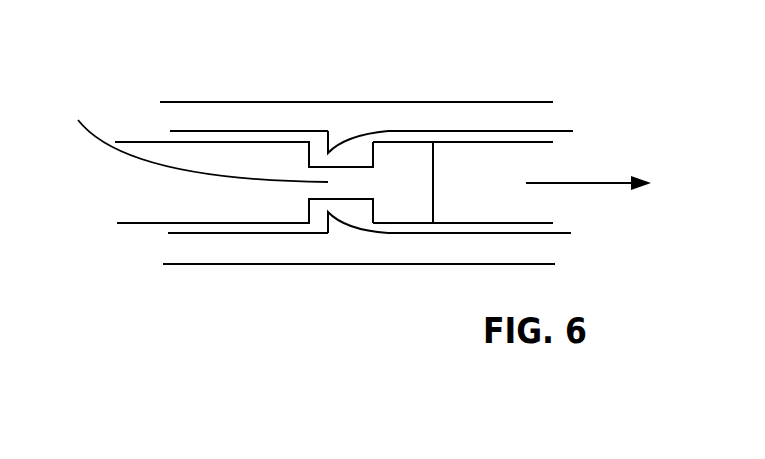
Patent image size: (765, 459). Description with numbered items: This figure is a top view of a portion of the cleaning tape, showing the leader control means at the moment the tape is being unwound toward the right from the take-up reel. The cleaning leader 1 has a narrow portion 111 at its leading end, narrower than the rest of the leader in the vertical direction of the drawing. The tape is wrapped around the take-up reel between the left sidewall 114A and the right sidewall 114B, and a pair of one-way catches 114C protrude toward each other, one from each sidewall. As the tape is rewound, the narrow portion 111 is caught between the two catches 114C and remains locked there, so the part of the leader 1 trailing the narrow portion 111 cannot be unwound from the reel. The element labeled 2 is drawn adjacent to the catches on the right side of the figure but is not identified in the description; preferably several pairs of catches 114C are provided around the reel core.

The cleaning leader 1 is at (162, 199).
The plug ferrule 2 is at (492, 158).
The narrow portion 111 is at (195, 133).
The left sidewall 114A is at (248, 112).
The right sidewall 114B is at (235, 250).
The one-way catch 114C is at (328, 153).